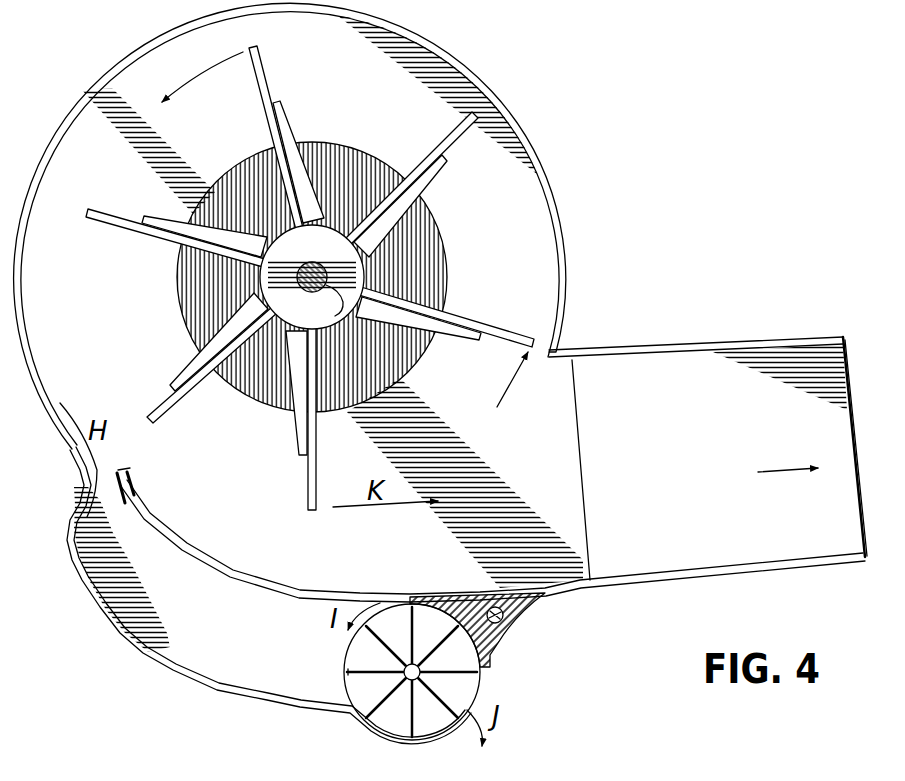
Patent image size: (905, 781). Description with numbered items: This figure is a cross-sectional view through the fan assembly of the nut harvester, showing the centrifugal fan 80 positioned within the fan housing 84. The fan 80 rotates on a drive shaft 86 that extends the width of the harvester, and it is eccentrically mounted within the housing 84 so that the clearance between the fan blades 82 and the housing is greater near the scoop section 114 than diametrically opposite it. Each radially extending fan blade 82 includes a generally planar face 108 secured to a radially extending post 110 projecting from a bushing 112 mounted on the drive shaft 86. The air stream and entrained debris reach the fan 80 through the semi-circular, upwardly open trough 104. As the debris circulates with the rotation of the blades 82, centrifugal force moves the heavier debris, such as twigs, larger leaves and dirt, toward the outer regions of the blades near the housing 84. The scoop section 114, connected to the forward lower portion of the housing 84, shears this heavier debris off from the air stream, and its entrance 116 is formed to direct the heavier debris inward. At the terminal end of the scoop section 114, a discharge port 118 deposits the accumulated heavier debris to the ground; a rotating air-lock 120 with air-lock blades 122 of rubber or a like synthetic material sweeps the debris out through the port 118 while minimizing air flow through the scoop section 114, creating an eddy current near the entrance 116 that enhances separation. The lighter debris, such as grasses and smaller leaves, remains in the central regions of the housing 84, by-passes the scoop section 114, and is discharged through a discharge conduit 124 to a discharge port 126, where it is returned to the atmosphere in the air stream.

The centrifugal fan 80 is at (287, 68).
The fan blades 82 is at (303, 278).
The fan housing 84 is at (487, 74).
The drive shaft 86 is at (345, 303).
The trough 104 is at (255, 398).
The planar face 108 is at (470, 113).
The post 110 is at (298, 157).
The bushing 112 is at (358, 263).
The scoop section 114 is at (203, 675).
The entrance 116 is at (120, 465).
The discharge port 118 is at (480, 697).
The air-lock 120 is at (403, 697).
The air-lock blades 122 is at (490, 648).
The discharge conduit 124 is at (643, 345).
The discharge port 126 is at (848, 373).